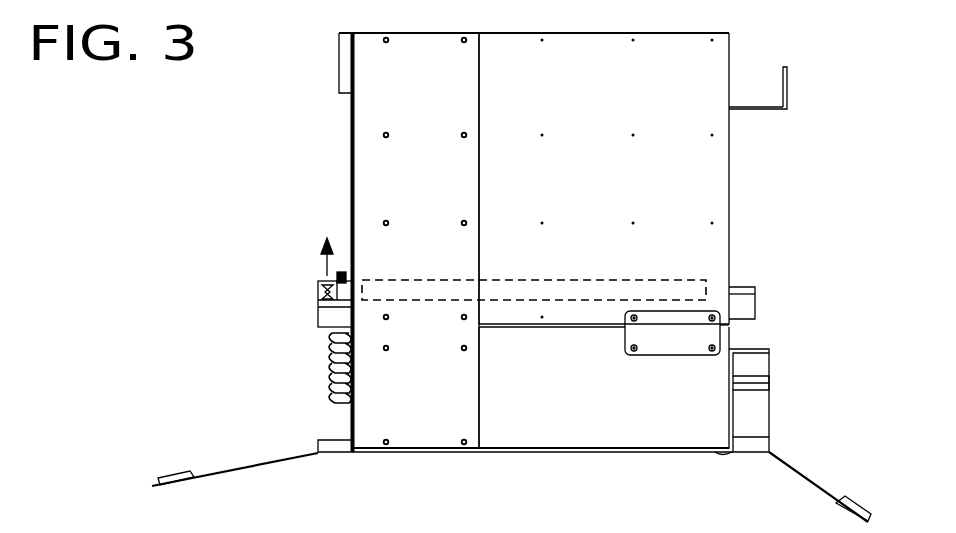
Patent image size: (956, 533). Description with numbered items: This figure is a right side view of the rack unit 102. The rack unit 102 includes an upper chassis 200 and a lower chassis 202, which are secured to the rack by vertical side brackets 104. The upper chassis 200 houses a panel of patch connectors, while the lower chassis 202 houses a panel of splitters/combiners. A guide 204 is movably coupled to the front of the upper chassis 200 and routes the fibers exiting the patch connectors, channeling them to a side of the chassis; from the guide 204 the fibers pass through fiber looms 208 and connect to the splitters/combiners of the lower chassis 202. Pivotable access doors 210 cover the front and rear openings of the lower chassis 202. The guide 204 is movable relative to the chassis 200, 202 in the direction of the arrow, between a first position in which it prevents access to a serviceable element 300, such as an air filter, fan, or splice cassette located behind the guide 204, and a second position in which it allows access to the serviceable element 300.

The rack unit 102 is at (287, 120).
The vertical side brackets 104 is at (383, 192).
The upper chassis 200 is at (602, 108).
The lower chassis 202 is at (604, 412).
The guide 204 is at (328, 313).
The fiber looms 208 is at (313, 382).
The pivotable access doors 210 is at (242, 472).
The serviceable element 300 is at (620, 277).